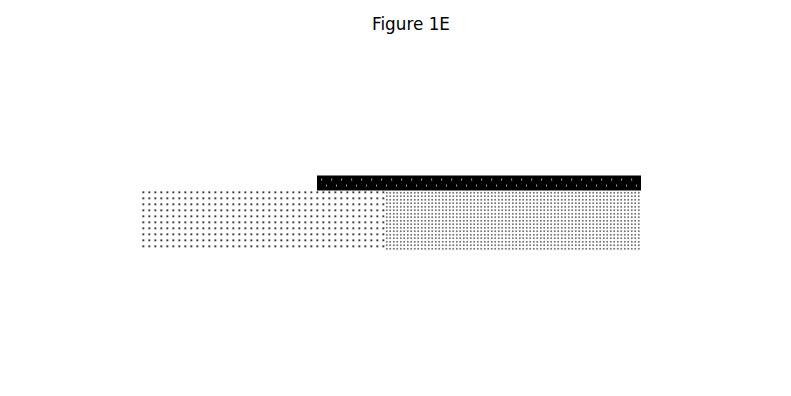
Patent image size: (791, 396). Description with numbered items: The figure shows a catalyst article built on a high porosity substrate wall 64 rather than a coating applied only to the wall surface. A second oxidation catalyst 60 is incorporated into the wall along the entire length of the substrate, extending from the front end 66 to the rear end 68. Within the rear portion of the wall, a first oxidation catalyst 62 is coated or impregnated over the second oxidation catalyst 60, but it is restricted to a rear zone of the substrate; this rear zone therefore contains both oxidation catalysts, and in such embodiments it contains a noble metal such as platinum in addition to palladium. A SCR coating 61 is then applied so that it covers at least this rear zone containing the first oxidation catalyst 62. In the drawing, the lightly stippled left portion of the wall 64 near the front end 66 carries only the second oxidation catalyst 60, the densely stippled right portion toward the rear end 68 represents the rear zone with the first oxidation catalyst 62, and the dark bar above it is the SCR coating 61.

The second oxidation catalyst 60 is at (359, 253).
The SCR coating 61 is at (528, 177).
The first oxidation catalyst 62 is at (528, 228).
The high porosity substrate wall 64 is at (287, 248).
The front end 66 is at (138, 205).
The rear end 68 is at (641, 213).